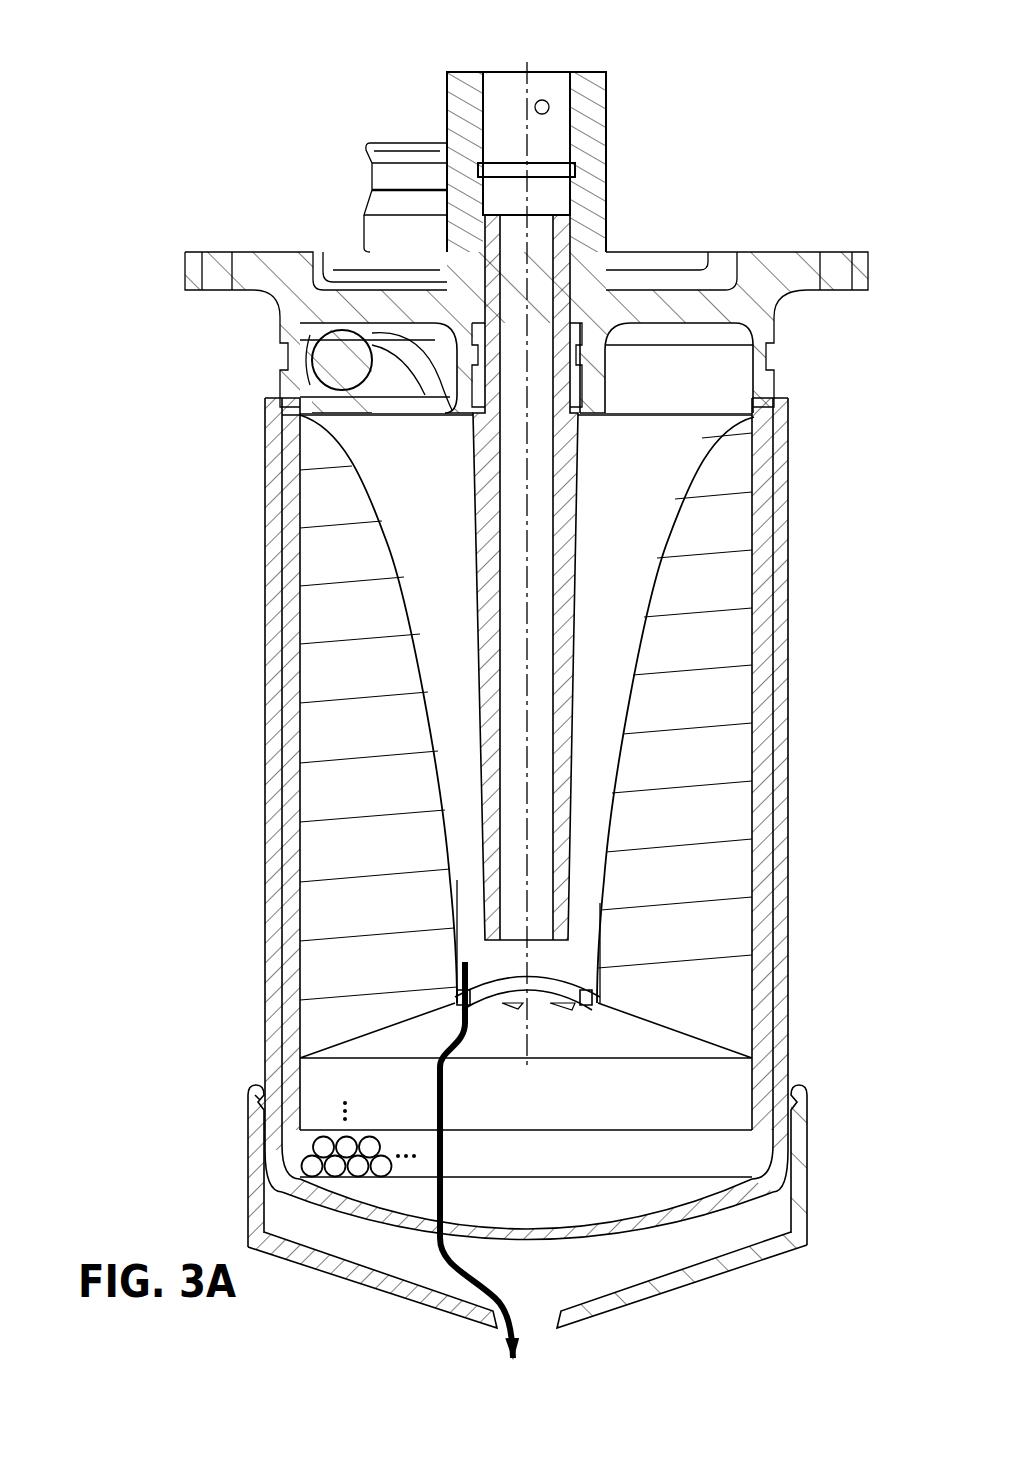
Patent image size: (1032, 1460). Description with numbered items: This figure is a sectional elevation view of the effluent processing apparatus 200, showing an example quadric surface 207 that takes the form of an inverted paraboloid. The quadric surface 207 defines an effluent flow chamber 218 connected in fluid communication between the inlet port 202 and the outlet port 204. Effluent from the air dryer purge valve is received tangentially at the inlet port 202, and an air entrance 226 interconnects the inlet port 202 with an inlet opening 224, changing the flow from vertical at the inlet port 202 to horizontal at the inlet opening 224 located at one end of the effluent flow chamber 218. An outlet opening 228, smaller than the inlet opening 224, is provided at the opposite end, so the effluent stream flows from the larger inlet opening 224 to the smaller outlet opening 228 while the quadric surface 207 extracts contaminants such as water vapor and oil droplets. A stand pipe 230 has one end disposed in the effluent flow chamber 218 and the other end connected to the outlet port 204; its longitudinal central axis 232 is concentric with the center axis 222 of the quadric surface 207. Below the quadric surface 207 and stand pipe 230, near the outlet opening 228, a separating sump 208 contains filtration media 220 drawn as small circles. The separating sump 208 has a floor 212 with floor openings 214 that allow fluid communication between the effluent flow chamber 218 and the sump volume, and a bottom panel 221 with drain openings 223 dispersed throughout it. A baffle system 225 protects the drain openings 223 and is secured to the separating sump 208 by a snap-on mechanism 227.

The effluent processing apparatus 200 is at (246, 126).
The inlet port 202 is at (392, 125).
The outlet port 204 is at (537, 62).
The quadric surface 207 is at (408, 620).
The separating sump 208 is at (698, 1158).
The floor 212 is at (603, 1027).
The floor openings 214 is at (552, 1005).
The effluent flow chamber 218 is at (460, 668).
The filtration media 220 is at (340, 1135).
The bottom panel 221 is at (790, 1240).
The center axis 222 is at (527, 380).
The drain openings 223 is at (433, 1228).
The inlet opening 224 is at (650, 417).
The baffle system 225 is at (440, 1302).
The air entrance 226 is at (350, 355).
The snap-on mechanism 227 is at (810, 1096).
The outlet opening 228 is at (563, 980).
The stand pipe 230 is at (560, 493).
The longitudinal central axis 232 is at (522, 745).